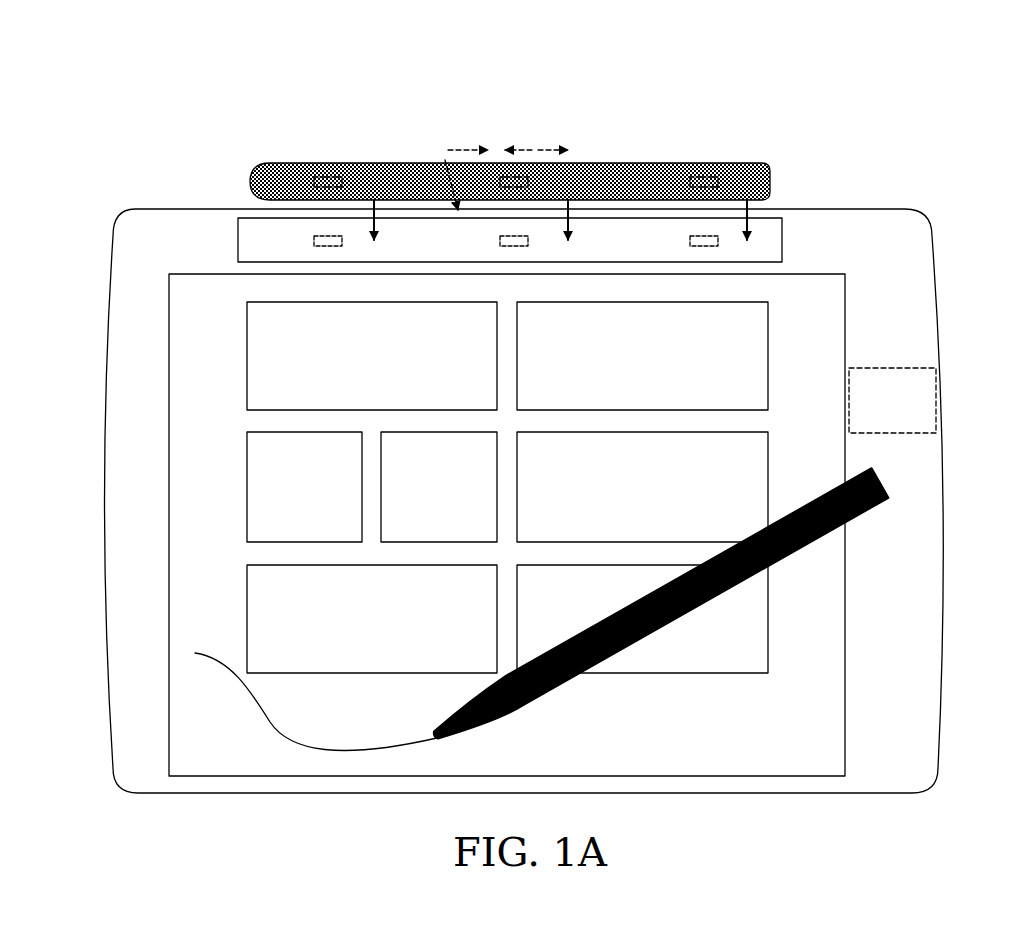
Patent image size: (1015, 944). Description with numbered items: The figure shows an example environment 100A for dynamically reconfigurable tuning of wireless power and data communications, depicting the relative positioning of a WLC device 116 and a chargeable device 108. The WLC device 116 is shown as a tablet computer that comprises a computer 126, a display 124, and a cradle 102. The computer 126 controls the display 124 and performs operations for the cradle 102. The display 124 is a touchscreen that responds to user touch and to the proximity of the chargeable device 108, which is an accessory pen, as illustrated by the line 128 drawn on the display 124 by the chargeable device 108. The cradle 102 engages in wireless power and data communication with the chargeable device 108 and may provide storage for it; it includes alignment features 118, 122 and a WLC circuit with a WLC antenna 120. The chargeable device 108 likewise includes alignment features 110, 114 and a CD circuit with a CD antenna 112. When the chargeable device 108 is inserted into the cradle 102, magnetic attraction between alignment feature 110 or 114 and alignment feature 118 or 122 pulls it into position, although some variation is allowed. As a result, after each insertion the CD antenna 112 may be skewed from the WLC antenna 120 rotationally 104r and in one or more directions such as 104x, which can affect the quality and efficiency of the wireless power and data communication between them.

The environment 100A is at (280, 85).
The cradle 102 is at (238, 220).
The rotational skew 104r is at (452, 124).
The directional skew 104x is at (535, 150).
The chargeable device 108 is at (603, 717).
The alignment feature 110 is at (342, 186).
The CD antenna 112 is at (528, 186).
The alignment feature 114 is at (692, 185).
The WLC device 116 is at (916, 210).
The alignment feature 118 is at (315, 245).
The WLC antenna 120 is at (502, 245).
The alignment feature 122 is at (692, 245).
The display 124 is at (845, 347).
The computer 126 is at (892, 400).
The line 128 is at (250, 693).